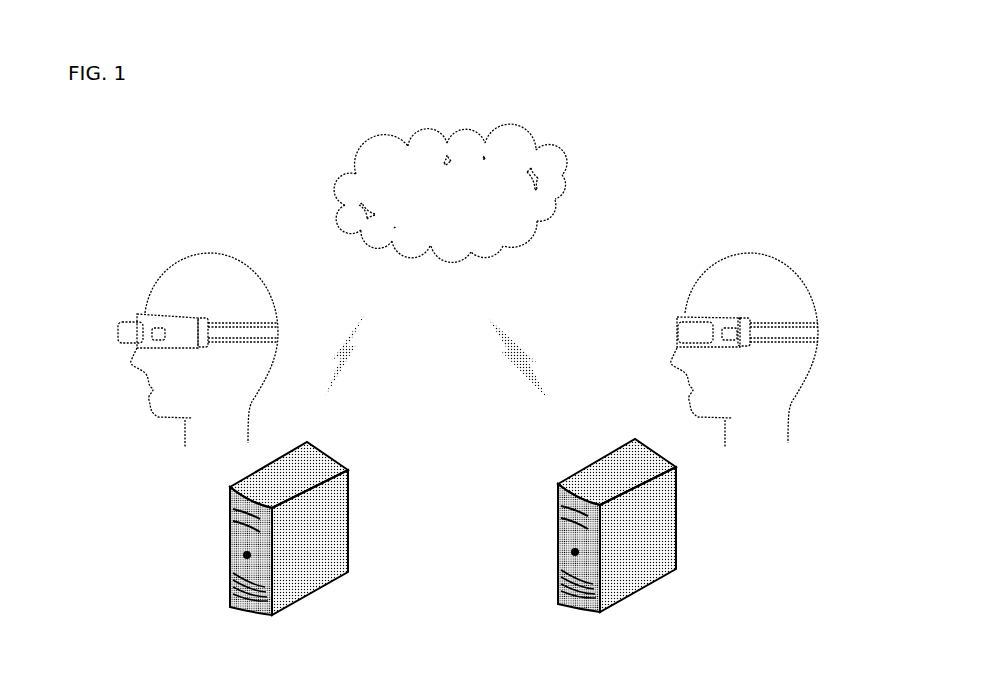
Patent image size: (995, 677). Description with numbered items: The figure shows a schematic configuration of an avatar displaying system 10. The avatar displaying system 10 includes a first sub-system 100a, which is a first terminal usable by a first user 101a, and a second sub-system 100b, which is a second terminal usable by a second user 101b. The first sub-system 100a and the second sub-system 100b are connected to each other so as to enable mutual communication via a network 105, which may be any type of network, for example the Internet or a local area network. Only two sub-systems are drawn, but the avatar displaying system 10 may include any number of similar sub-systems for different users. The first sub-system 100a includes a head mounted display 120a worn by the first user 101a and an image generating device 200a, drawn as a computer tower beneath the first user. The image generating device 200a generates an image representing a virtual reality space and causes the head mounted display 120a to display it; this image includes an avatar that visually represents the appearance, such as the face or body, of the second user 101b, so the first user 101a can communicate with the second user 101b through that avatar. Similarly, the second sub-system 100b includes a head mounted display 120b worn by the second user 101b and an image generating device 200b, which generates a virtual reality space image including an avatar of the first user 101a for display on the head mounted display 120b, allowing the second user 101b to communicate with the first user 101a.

The avatar displaying system 10 is at (253, 84).
The network 105 is at (450, 184).
The first sub-system 100a is at (172, 228).
The first user 101a is at (205, 335).
The head mounted display 120a is at (152, 325).
The image generating device 200a is at (289, 528).
The second sub-system 100b is at (725, 228).
The second user 101b is at (759, 335).
The head mounted display 120b is at (700, 324).
The image generating device 200b is at (619, 526).